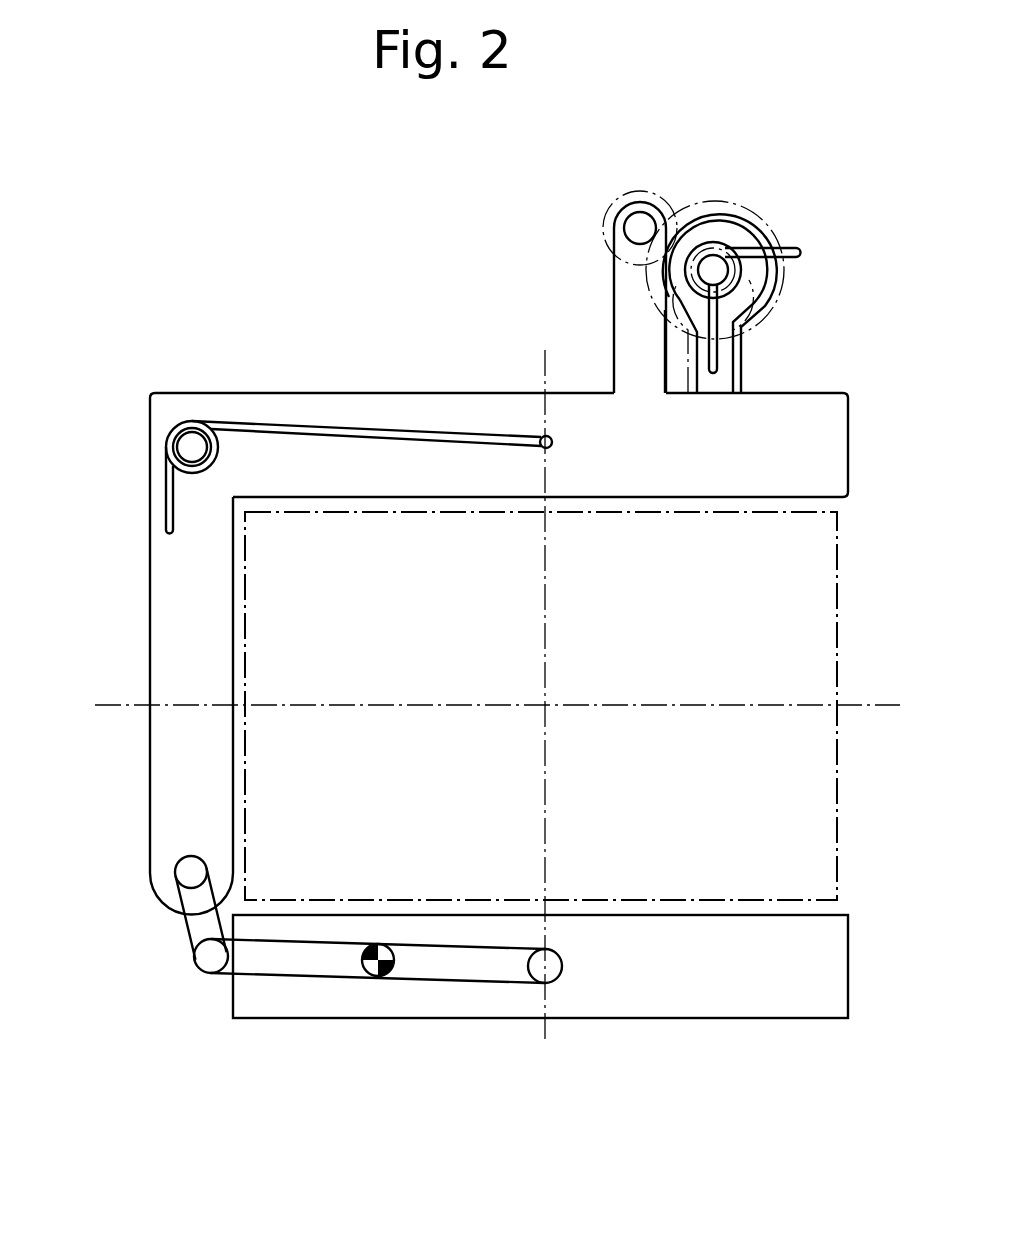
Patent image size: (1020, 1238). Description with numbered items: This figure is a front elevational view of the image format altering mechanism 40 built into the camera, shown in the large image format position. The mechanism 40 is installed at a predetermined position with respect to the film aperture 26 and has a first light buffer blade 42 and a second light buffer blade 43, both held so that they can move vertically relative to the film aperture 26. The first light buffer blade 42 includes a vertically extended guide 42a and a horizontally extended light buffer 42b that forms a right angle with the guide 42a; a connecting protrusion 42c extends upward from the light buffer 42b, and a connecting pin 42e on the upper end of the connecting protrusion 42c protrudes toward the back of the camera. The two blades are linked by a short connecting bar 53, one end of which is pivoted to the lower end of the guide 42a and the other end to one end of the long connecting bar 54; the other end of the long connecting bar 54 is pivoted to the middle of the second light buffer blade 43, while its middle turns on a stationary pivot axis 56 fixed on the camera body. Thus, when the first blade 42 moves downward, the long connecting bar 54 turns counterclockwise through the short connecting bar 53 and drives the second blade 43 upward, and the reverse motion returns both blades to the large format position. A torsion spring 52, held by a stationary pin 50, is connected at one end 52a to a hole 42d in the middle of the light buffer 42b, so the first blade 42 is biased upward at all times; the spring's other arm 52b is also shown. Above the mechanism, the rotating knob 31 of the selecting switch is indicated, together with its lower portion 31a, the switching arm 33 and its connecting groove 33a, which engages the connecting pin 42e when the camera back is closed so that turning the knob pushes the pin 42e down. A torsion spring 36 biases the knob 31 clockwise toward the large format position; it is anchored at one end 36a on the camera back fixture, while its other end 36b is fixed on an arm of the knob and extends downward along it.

The image format altering mechanism 40 is at (257, 323).
The first light buffer blade 42 is at (815, 418).
The guide 42a is at (166, 627).
The light buffer 42b is at (437, 415).
The connecting protrusion 42c is at (632, 308).
The hole 42d is at (555, 447).
The connecting pin 42e is at (642, 223).
The second light buffer blade 43 is at (788, 990).
The film aperture 26 is at (755, 625).
The stationary pin 50 is at (187, 449).
The torsion spring 52 is at (225, 421).
The one end of the torsion spring 52a is at (525, 433).
The second arm of spring 52b is at (168, 519).
The short connecting bar 53 is at (193, 920).
The long connecting bar 54 is at (320, 962).
The stationary pivot axis 56 is at (372, 967).
The rotating knob 31 is at (740, 200).
The slot of holder 31a is at (740, 380).
The switching arm 33 is at (625, 197).
The connecting groove 33a is at (672, 230).
The torsion spring 36 is at (788, 243).
The one end of the torsion spring 36a is at (800, 247).
The other end of the torsion spring 36b is at (745, 357).